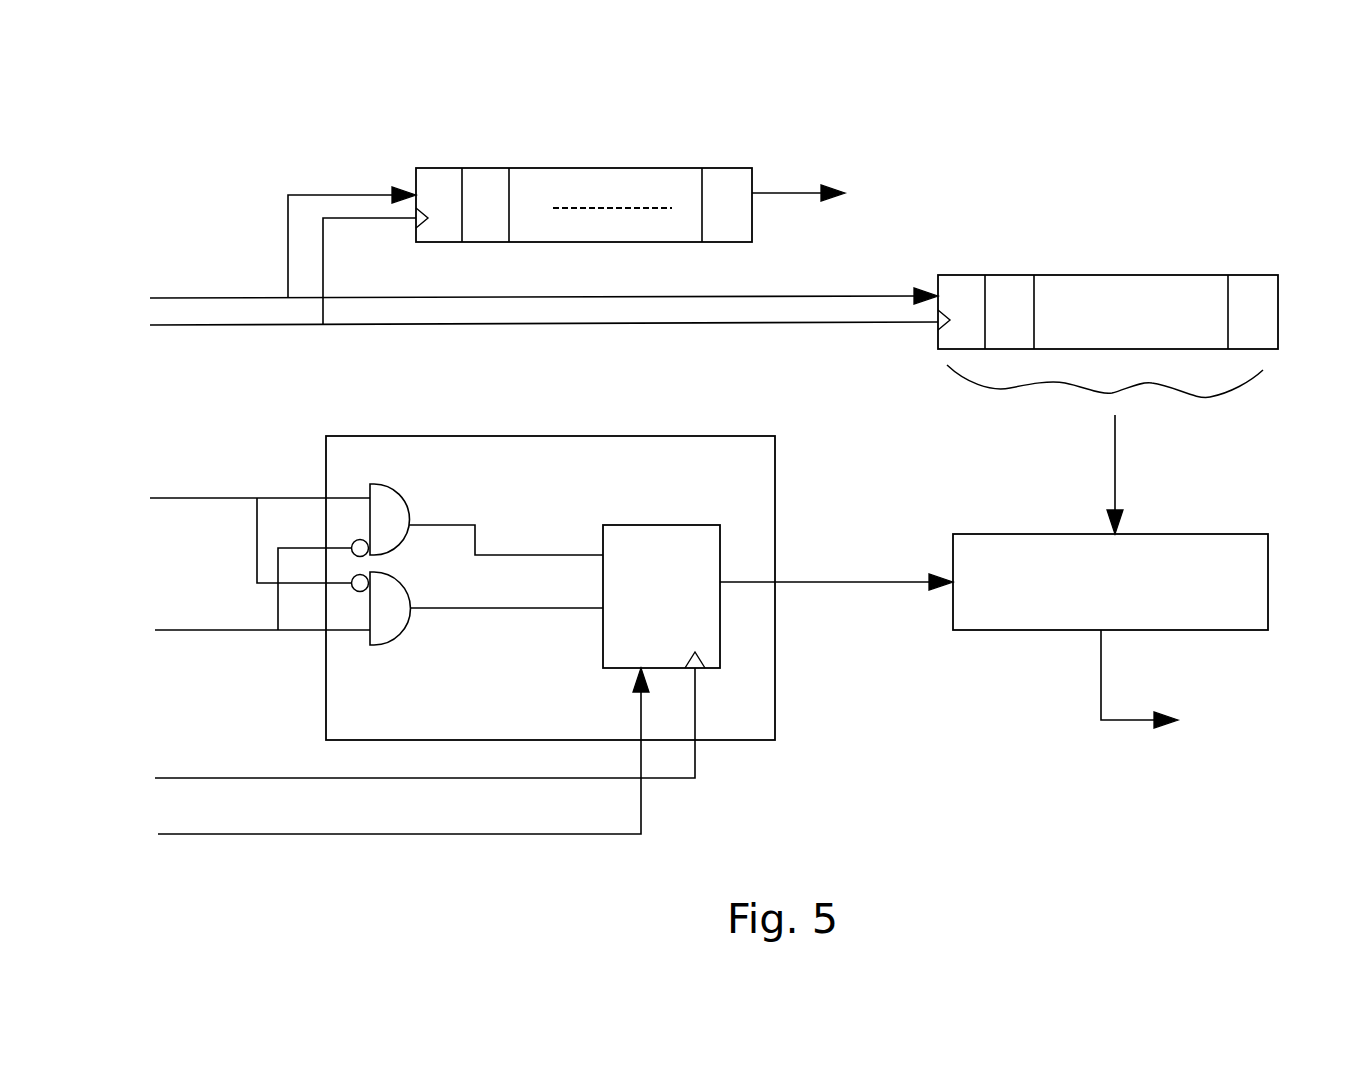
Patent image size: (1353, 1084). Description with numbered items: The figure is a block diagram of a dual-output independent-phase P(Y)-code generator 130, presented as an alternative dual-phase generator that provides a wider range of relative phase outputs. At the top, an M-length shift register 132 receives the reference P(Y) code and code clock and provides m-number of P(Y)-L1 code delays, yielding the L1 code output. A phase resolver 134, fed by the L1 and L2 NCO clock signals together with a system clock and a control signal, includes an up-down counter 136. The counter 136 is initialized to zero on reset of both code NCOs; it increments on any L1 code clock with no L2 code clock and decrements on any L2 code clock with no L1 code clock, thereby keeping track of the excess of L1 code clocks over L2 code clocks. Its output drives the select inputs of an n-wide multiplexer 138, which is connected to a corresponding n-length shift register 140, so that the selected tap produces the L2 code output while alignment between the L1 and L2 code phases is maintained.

The dual-output independent-phase P(Y)-code generator 130 is at (215, 120).
The M-length shift register 132 is at (474, 243).
The phase resolver 134 is at (418, 436).
The up-down counter 136 is at (705, 524).
The n-wide multiplexer 138 is at (1200, 533).
The n-length shift register 140 is at (1250, 275).